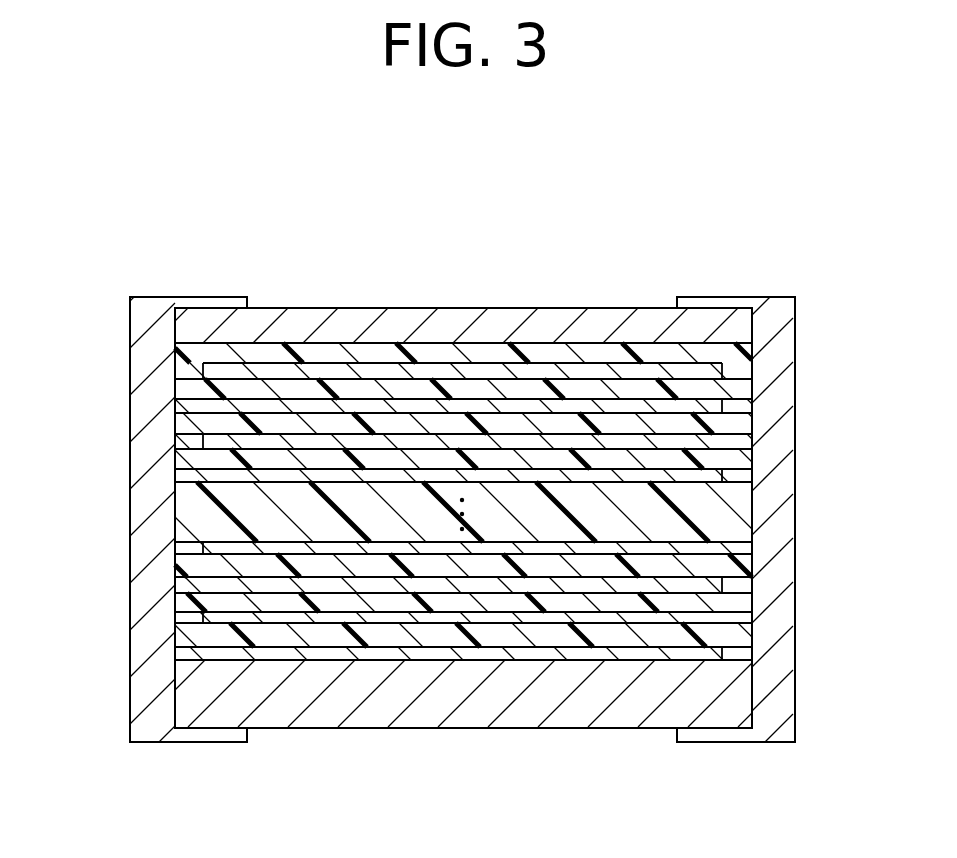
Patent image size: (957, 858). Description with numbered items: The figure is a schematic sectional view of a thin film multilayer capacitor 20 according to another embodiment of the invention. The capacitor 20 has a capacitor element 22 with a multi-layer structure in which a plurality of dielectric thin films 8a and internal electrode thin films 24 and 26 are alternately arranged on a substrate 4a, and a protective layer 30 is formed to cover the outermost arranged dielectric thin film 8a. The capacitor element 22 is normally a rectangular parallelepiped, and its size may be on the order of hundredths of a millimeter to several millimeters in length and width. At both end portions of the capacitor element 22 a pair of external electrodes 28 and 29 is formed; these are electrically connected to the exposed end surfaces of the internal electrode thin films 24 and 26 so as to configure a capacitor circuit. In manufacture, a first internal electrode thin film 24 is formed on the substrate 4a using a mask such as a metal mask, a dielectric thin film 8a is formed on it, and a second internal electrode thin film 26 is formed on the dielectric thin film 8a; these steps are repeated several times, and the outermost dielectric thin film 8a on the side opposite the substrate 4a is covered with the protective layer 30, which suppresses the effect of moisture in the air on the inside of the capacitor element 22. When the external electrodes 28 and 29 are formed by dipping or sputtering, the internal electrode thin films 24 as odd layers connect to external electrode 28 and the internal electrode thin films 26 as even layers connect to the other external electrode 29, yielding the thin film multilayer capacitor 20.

The thin film multilayer capacitor 20 is at (440, 251).
The external electrode 28 is at (150, 315).
The external electrode 29 is at (773, 315).
The protective layer 30 is at (578, 308).
The capacitor element 22 is at (388, 728).
The substrate 4a is at (603, 708).
The dielectric thin film 8a is at (733, 463).
The first internal electrode thin film 24 is at (187, 653).
The second internal electrode thin film 26 is at (730, 617).